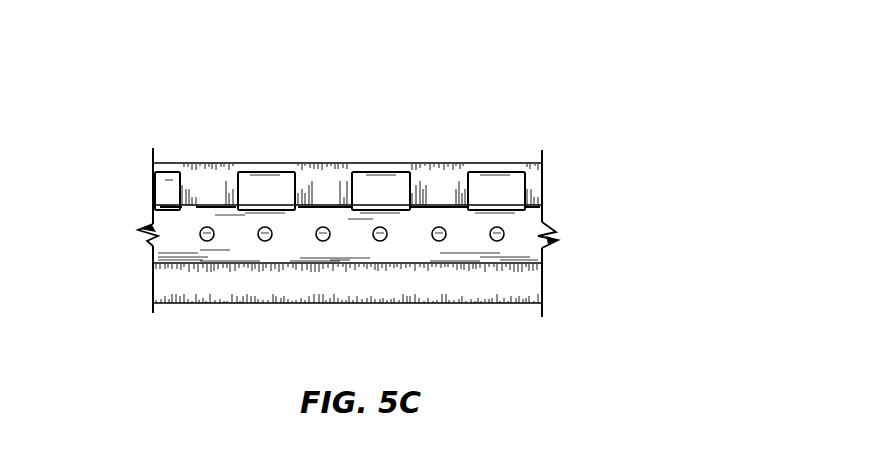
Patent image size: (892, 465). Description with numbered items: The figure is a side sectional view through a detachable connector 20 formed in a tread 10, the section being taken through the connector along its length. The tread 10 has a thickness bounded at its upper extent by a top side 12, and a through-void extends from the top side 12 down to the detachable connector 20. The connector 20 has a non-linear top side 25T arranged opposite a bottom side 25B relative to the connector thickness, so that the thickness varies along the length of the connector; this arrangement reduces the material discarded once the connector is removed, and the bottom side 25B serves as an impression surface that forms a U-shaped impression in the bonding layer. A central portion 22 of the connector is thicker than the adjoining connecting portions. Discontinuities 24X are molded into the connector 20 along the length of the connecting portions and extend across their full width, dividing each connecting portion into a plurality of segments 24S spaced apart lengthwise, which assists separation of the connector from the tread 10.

The tread 10 is at (143, 114).
The top side 12 is at (485, 163).
The detachable connector 20 is at (163, 192).
The central portion 22 is at (163, 223).
The segments 24S is at (504, 233).
The discontinuities 24X is at (237, 243).
The non-linear top side 25T is at (317, 205).
The bottom side 25B is at (482, 263).